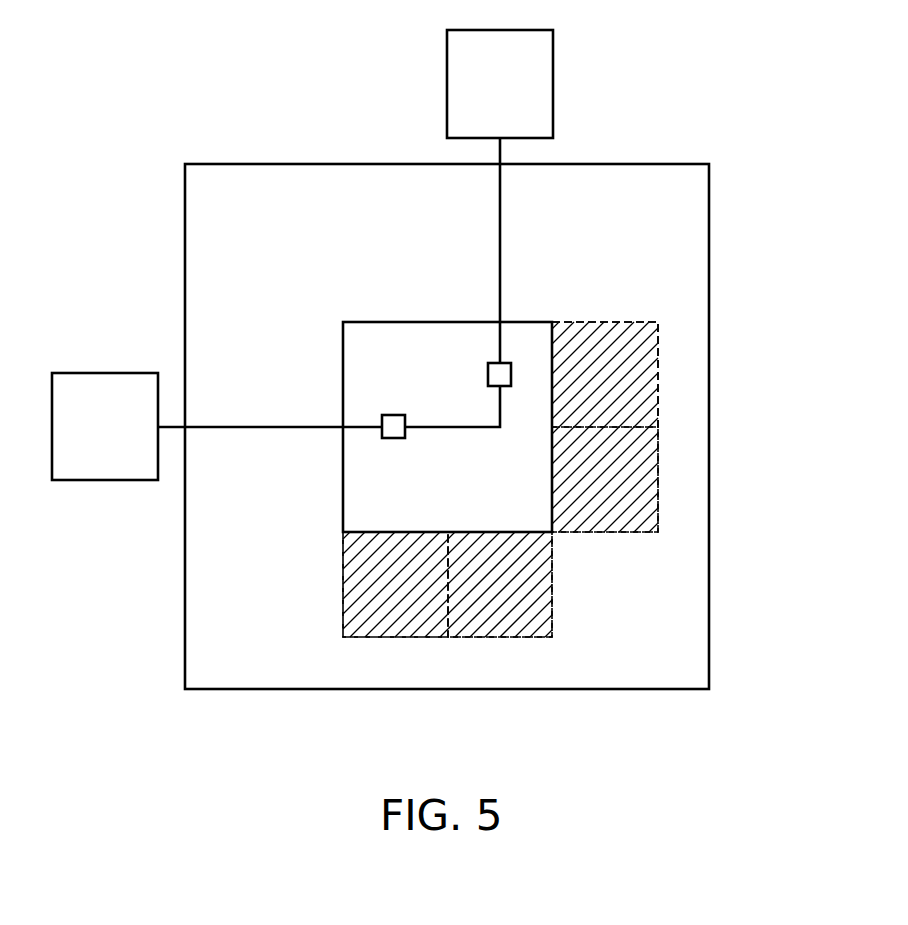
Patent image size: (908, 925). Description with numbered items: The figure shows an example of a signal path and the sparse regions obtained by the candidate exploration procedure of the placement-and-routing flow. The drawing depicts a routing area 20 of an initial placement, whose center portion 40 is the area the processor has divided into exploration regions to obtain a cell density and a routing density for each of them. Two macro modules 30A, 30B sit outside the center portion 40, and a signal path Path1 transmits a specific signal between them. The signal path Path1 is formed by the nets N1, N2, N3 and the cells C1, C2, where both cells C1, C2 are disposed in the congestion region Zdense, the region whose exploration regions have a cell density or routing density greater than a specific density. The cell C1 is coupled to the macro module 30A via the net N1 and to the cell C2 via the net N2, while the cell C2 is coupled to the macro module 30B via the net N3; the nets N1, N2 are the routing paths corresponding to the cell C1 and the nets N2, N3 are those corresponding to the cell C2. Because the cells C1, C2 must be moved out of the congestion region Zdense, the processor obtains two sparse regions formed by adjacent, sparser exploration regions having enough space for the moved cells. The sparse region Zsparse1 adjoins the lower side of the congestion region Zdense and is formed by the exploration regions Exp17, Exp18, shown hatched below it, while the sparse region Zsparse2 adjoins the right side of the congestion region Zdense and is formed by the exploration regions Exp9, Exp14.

The routing area 20 is at (894, 690).
The center portion 40 is at (709, 215).
The macro module 30A is at (78, 443).
The macro module 30B is at (473, 98).
The net N1 is at (262, 424).
The net N2 is at (452, 430).
The net N3 is at (501, 293).
The cell C1 is at (395, 440).
The cell C2 is at (487, 374).
The signal path Path1 is at (508, 219).
The congestion region Zdense is at (342, 480).
The sparse region Zsparse1 is at (395, 638).
The sparse region Zsparse2 is at (605, 534).
The exploration region Exp9 is at (637, 391).
The exploration region Exp14 is at (650, 496).
The exploration region Exp17 is at (440, 598).
The exploration region Exp18 is at (545, 598).